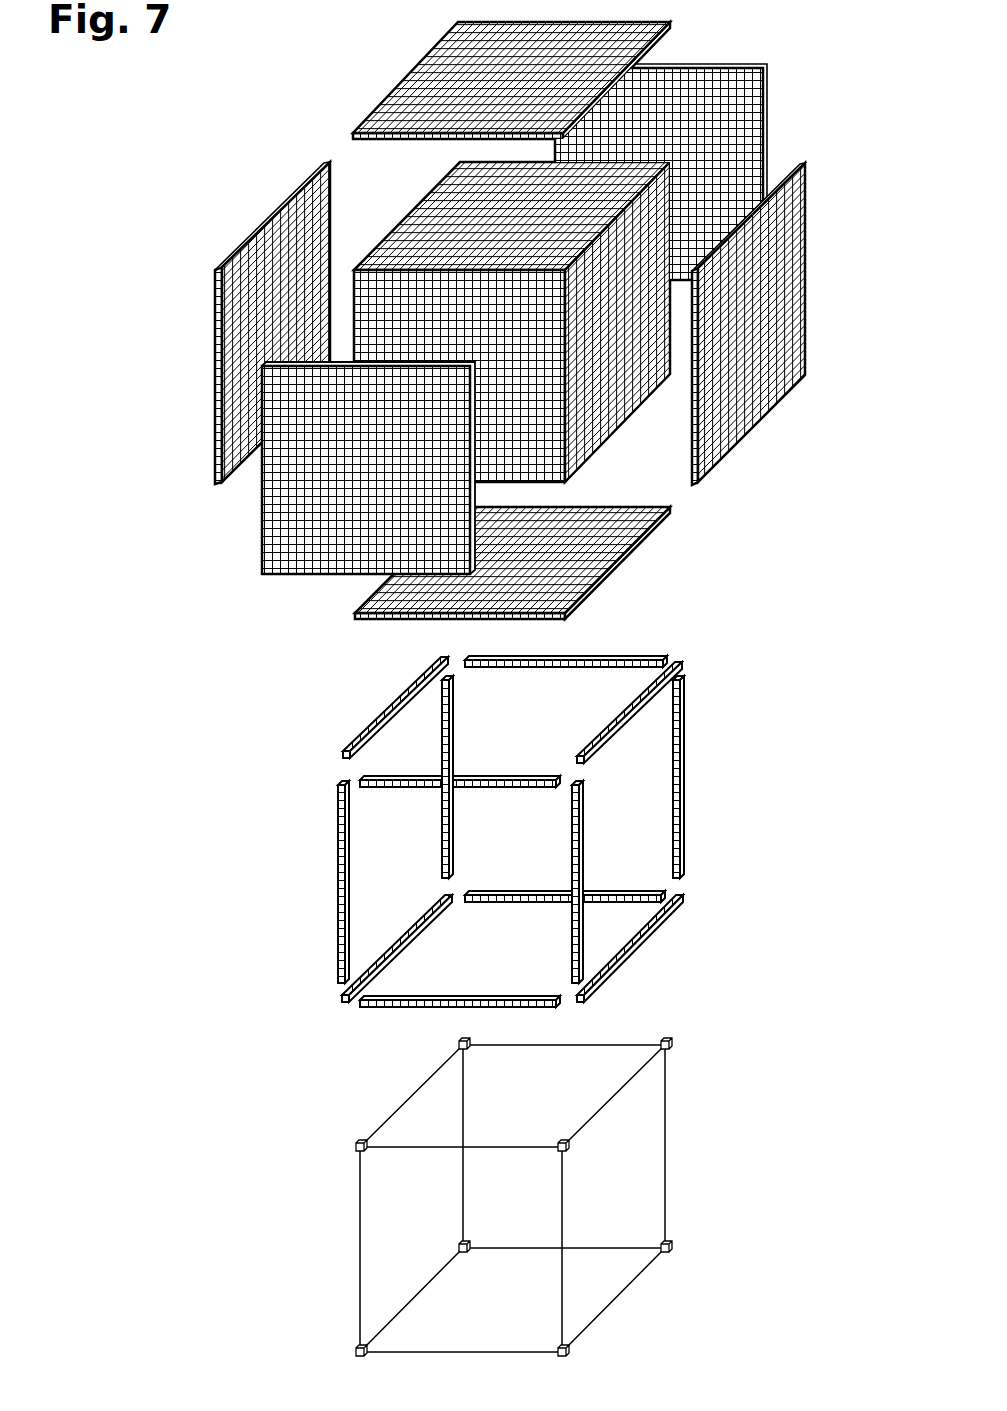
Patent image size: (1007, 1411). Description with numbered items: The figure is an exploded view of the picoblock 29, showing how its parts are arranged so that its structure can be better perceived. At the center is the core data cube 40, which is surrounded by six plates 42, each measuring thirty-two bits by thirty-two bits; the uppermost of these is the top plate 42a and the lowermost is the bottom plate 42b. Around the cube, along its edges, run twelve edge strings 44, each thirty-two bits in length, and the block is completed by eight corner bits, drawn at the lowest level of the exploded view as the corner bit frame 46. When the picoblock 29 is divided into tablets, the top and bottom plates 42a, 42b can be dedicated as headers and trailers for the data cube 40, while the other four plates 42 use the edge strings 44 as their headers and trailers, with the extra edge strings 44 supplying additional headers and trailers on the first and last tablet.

The picoblock 29 is at (797, 127).
The core data cube 40 is at (400, 222).
The plates 42 is at (263, 215).
The top plate 42a is at (396, 84).
The bottom plate 42b is at (634, 553).
The edge strings 44 is at (645, 650).
The corner frame 46 is at (673, 1042).